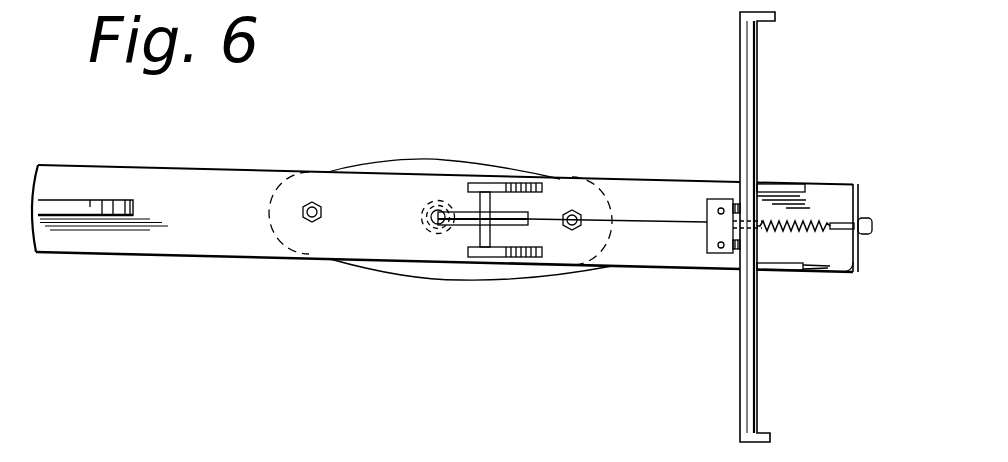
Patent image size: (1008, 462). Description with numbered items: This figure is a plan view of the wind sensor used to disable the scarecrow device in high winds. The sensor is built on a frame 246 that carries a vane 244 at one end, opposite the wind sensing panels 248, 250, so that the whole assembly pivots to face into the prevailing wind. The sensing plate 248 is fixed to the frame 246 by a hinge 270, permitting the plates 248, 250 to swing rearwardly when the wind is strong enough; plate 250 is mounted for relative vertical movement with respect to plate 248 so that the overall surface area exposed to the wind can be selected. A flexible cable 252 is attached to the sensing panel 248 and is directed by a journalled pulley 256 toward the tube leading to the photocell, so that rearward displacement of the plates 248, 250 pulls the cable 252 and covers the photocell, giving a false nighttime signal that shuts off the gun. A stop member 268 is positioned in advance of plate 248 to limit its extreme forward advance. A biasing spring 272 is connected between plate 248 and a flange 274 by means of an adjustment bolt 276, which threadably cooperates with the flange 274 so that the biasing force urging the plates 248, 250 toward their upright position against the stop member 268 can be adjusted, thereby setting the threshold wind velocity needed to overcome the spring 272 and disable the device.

The vane 244 is at (93, 201).
The frame 246 is at (231, 246).
The wind sensing panel 248 is at (740, 392).
The wind sensing panel 250 is at (757, 90).
The flexible cable 252 is at (625, 222).
The journalled pulley 256 is at (462, 210).
The stop member 268 is at (777, 188).
The hinge 270 is at (705, 243).
The biasing spring 272 is at (805, 222).
The flange 274 is at (842, 272).
The adjustment bolt 276 is at (868, 236).